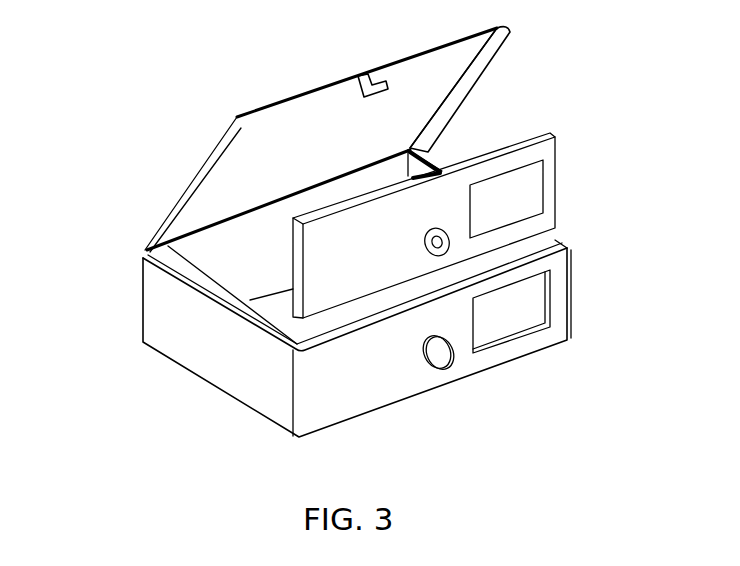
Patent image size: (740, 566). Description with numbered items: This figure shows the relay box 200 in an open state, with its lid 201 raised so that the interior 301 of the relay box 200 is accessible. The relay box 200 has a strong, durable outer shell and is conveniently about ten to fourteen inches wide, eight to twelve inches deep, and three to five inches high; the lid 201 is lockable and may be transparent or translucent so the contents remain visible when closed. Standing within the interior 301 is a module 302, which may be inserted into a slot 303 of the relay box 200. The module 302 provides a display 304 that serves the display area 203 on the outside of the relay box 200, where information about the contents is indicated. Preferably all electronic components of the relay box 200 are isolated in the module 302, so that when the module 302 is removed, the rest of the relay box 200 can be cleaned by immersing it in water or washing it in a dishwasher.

The relay box 200 is at (182, 63).
The lid 201 is at (337, 90).
The display area 203 is at (513, 320).
The interior 301 is at (203, 267).
The module 302 is at (554, 133).
The slot 303 is at (556, 241).
The display 304 is at (538, 192).